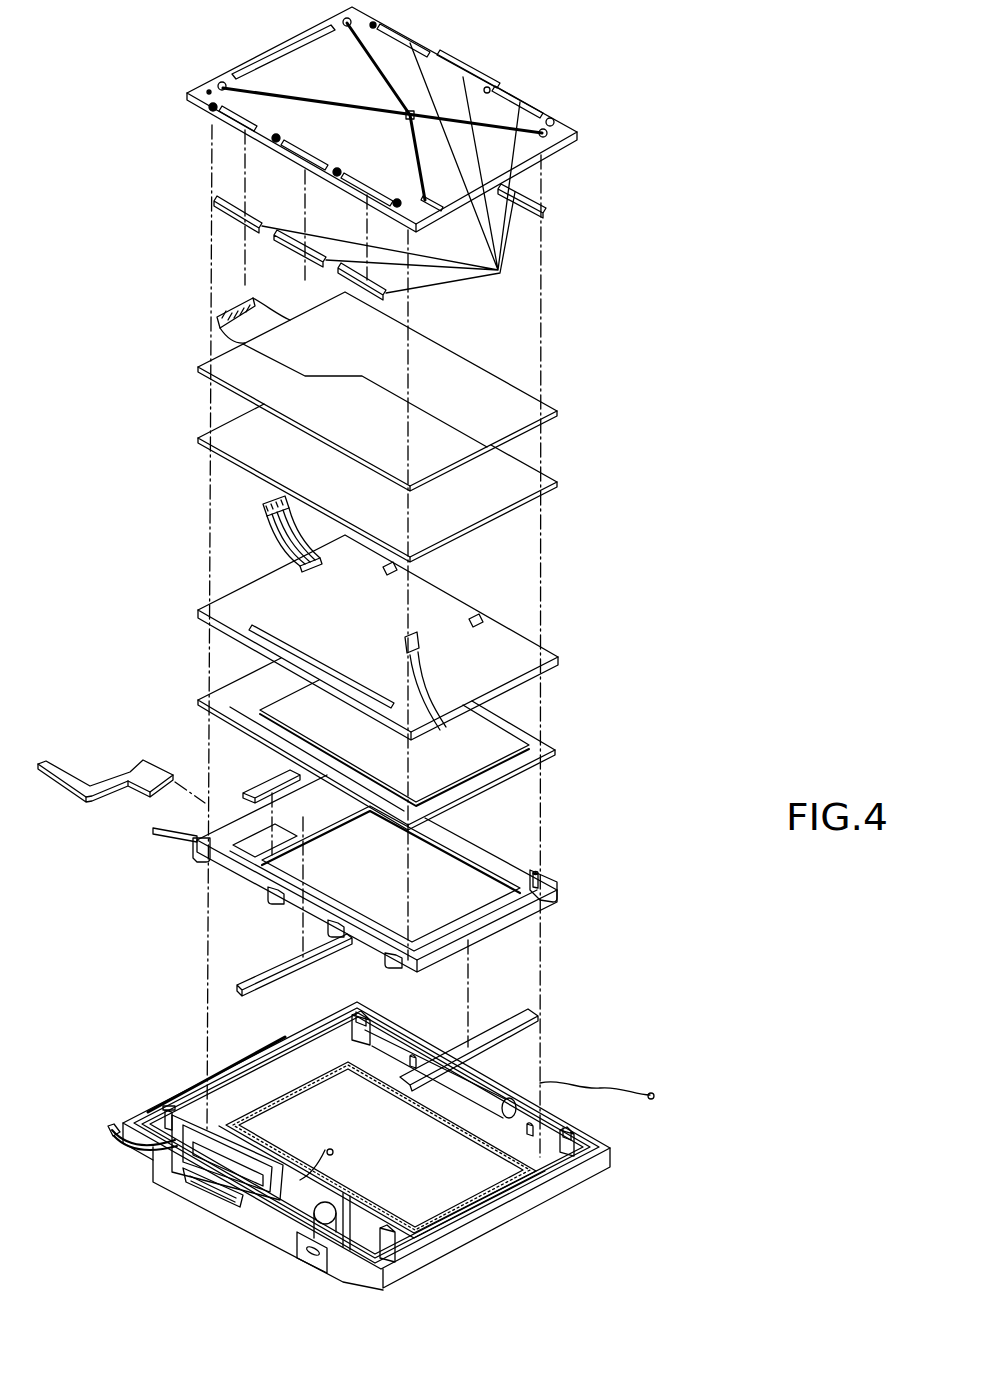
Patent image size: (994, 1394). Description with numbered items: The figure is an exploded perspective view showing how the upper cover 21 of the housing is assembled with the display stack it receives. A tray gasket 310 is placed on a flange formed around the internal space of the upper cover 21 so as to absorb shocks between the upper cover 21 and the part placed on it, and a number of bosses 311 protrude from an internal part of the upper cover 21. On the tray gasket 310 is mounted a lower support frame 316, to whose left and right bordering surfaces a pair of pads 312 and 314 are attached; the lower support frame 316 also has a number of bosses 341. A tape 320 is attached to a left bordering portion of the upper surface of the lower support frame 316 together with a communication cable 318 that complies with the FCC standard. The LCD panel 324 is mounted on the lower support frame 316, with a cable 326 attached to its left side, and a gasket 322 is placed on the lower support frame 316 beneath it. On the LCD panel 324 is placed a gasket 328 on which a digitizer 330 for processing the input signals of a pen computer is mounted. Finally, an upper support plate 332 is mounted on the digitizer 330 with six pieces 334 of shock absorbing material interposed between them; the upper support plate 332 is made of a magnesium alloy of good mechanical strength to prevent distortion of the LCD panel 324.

The upper cover 21 is at (527, 1216).
The tray gasket 310 is at (452, 1225).
The bosses 311 is at (412, 1052).
The pad 312 is at (541, 1017).
The pad 314 is at (263, 973).
The lower support frame 316 is at (548, 898).
The communication cable 318 is at (138, 765).
The tape 320 is at (267, 783).
The gasket 322 is at (552, 749).
The LCD panel 324 is at (553, 672).
The cable 326 is at (268, 505).
The gasket 328 is at (550, 483).
The digitizer 330 is at (540, 403).
The upper support plate 332 is at (566, 157).
The pieces of shock absorbing material 334 is at (500, 273).
The bosses 341 is at (190, 838).